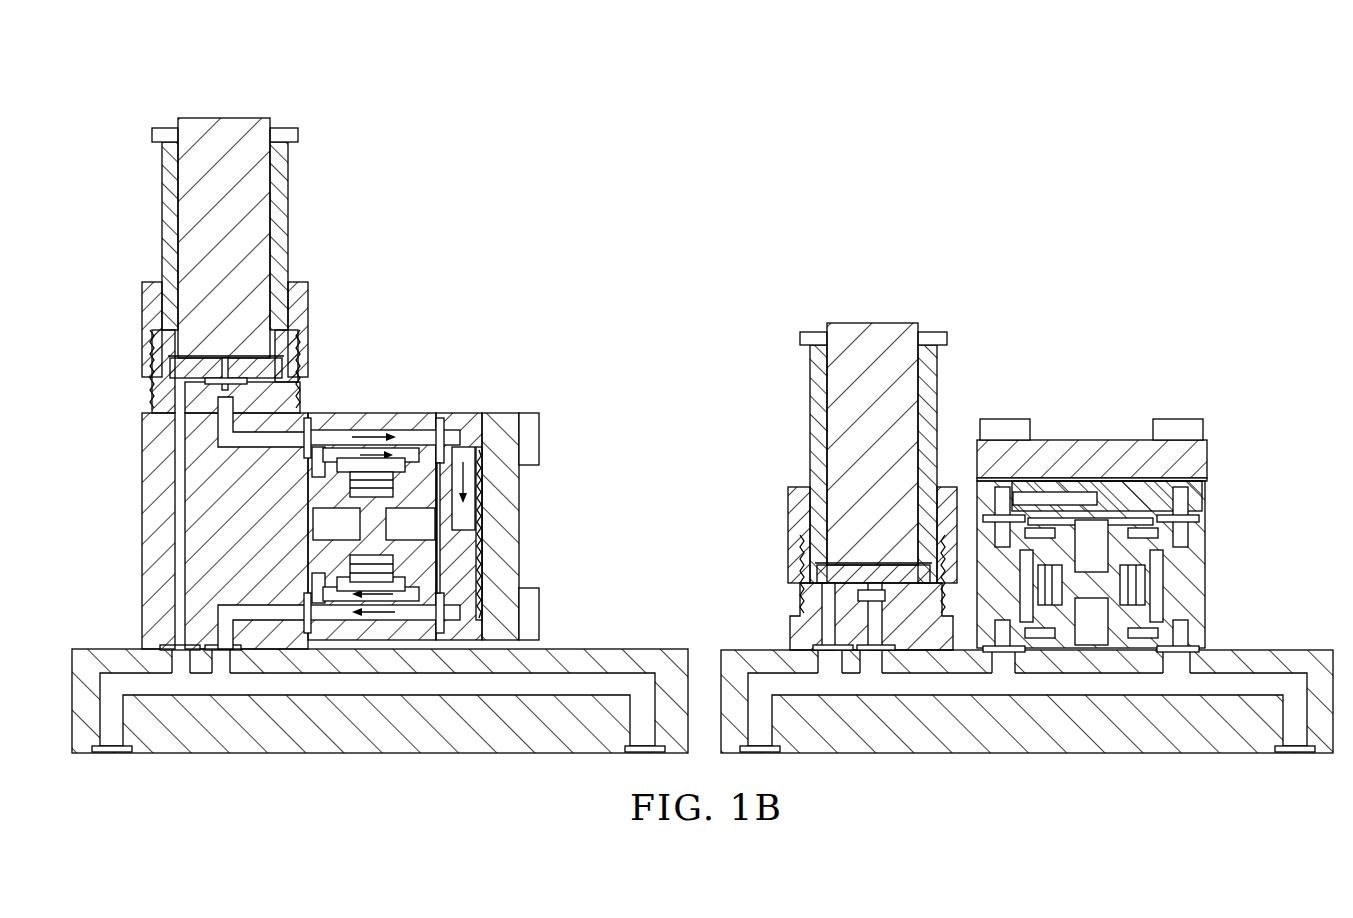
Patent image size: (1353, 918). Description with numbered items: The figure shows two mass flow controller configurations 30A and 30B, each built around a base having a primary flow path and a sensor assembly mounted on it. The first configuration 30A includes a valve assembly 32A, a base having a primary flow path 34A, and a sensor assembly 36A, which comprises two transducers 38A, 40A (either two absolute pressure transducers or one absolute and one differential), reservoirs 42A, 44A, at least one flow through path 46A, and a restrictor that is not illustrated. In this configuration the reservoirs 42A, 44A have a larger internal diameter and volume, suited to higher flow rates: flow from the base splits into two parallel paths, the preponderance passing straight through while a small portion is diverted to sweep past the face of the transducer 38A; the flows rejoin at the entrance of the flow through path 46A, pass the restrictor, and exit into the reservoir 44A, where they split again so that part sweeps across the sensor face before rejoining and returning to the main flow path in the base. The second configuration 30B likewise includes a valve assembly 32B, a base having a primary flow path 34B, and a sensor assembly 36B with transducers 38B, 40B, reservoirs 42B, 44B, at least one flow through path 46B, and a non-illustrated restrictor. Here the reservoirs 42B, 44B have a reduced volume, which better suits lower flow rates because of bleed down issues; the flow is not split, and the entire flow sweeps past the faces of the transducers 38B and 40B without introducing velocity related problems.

The MFC configuration 30A is at (500, 164).
The valve assembly 32A is at (152, 194).
The base having a primary flow path 34A is at (247, 447).
The sensor assembly 36A is at (553, 408).
The transducer 38A is at (398, 450).
The transducer 40A is at (403, 590).
The reservoir 42A is at (345, 431).
The reservoir 44A is at (333, 612).
The flow through path 46A is at (484, 545).
The MFC configuration 30B is at (1199, 306).
The valve assembly 32B is at (1205, 548).
The base having a primary flow path 34B is at (945, 688).
The sensor assembly 36B is at (1230, 433).
The transducer 38B is at (1003, 523).
The transducer 40B is at (1170, 560).
The reservoir 42B is at (1032, 612).
The reservoir 44B is at (1163, 592).
The flow through path 46B is at (1085, 478).